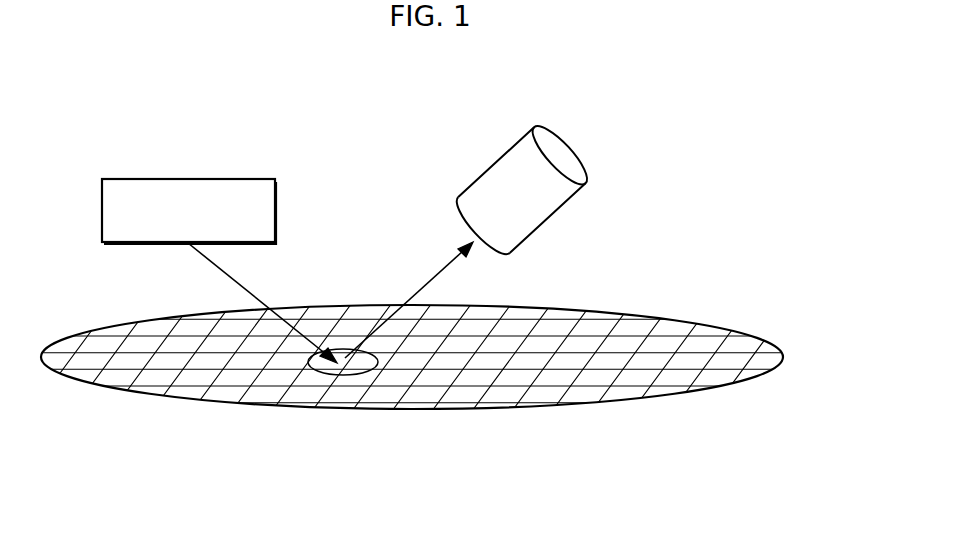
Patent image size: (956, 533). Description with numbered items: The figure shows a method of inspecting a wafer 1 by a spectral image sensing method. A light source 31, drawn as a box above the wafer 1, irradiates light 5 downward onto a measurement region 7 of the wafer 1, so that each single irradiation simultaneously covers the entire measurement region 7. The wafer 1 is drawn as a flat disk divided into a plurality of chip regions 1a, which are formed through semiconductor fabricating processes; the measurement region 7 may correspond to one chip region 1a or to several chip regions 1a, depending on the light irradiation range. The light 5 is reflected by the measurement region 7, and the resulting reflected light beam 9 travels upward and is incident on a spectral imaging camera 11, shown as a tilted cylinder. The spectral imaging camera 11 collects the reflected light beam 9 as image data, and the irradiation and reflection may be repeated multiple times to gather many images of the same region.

The wafer 1 is at (783, 357).
The chip region 1a is at (708, 360).
The light source 31 is at (190, 179).
The light 5 is at (250, 288).
The measurement region 7 is at (368, 360).
The reflected light beam 9 is at (418, 290).
The spectral imaging camera 11 is at (497, 172).